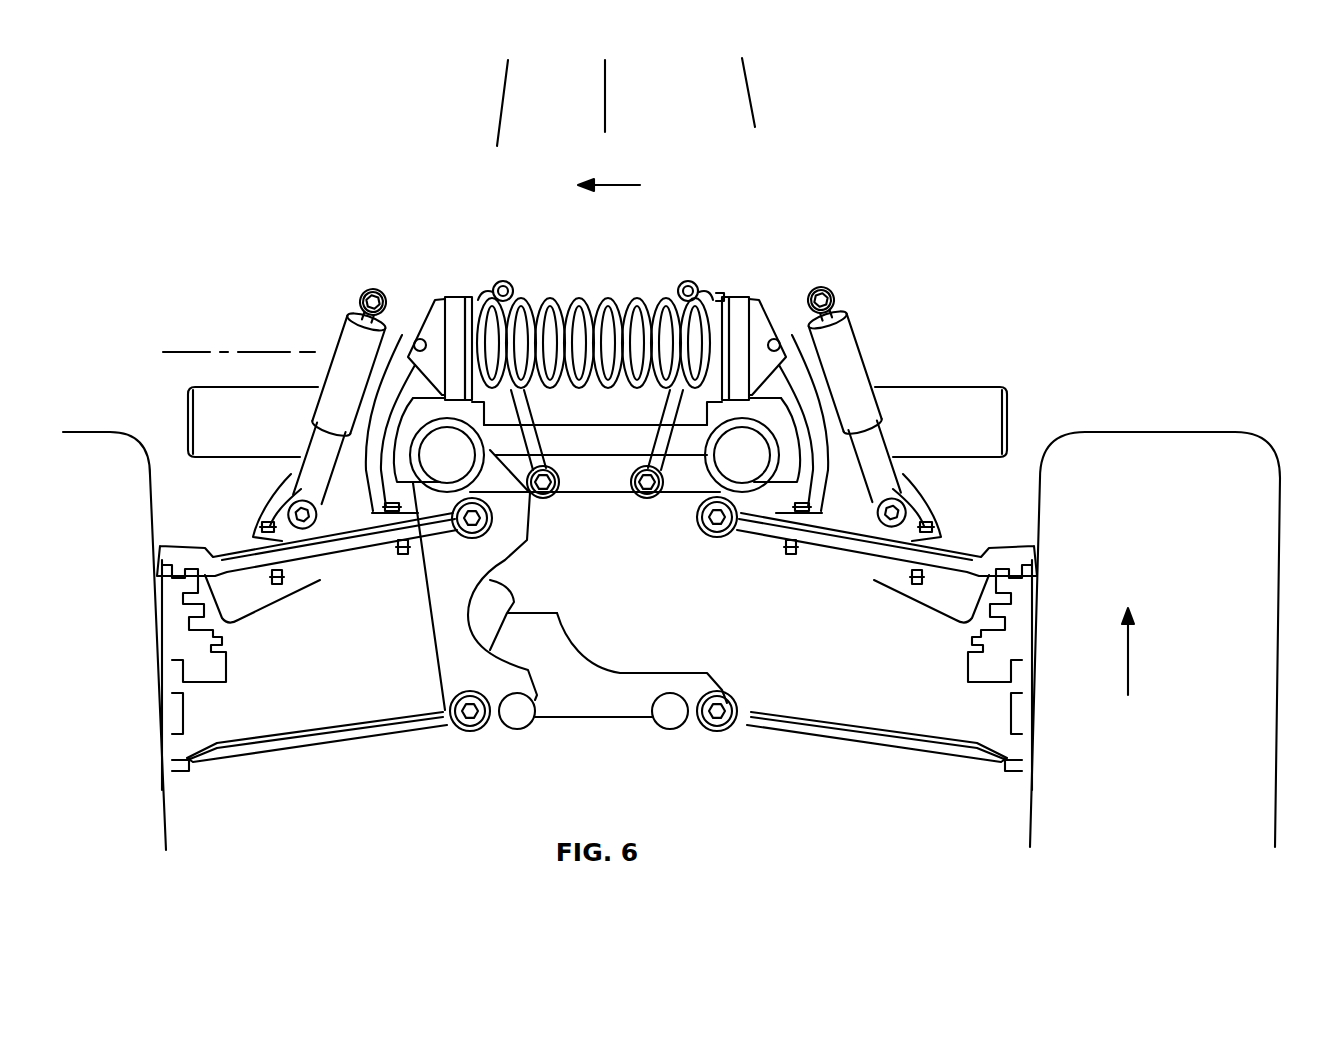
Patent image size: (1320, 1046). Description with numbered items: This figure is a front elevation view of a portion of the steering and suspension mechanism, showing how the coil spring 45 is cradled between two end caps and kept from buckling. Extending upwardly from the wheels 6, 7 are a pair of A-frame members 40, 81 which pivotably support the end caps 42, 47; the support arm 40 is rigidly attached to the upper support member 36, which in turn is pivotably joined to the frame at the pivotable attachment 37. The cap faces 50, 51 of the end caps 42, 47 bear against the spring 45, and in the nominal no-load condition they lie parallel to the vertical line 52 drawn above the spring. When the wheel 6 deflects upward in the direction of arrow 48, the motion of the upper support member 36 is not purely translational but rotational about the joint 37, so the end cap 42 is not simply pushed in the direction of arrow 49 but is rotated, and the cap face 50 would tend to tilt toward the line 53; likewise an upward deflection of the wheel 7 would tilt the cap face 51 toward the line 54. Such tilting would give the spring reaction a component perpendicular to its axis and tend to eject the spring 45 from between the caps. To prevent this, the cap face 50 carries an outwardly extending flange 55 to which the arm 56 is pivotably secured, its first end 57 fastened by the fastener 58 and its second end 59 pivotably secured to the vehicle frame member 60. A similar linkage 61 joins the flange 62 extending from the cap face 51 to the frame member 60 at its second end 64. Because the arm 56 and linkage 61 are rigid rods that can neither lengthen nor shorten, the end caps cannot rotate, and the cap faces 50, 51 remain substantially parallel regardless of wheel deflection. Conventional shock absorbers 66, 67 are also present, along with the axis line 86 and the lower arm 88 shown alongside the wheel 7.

The wheel 6 is at (1026, 826).
The wheel 7 is at (100, 432).
The upper support member 36 is at (870, 548).
The pivotable attachment 37 is at (713, 522).
The support arm 40 is at (780, 487).
The end cap 42 is at (732, 305).
The coil spring 45 is at (600, 300).
The end cap 47 is at (440, 305).
The arrow 48 is at (1130, 657).
The arrow 49 is at (613, 185).
The cap face 50 is at (735, 297).
The cap face 51 is at (487, 300).
The vertical line 52 is at (610, 90).
The line 53 is at (752, 90).
The line 54 is at (500, 100).
The flange 55 is at (716, 293).
The arm 56 is at (662, 418).
The first end 57 is at (690, 290).
The fastener 58 is at (678, 285).
The second end 59 is at (645, 500).
The vehicle frame member 60 is at (585, 480).
The linkage 61 is at (527, 400).
The flange 62 is at (512, 288).
The second end 64 is at (543, 500).
The shock absorber 66 is at (860, 355).
The shock absorber 67 is at (348, 360).
The A-frame member 81 is at (390, 392).
The axis line 86 is at (240, 352).
The left upper control arm 88 is at (318, 552).